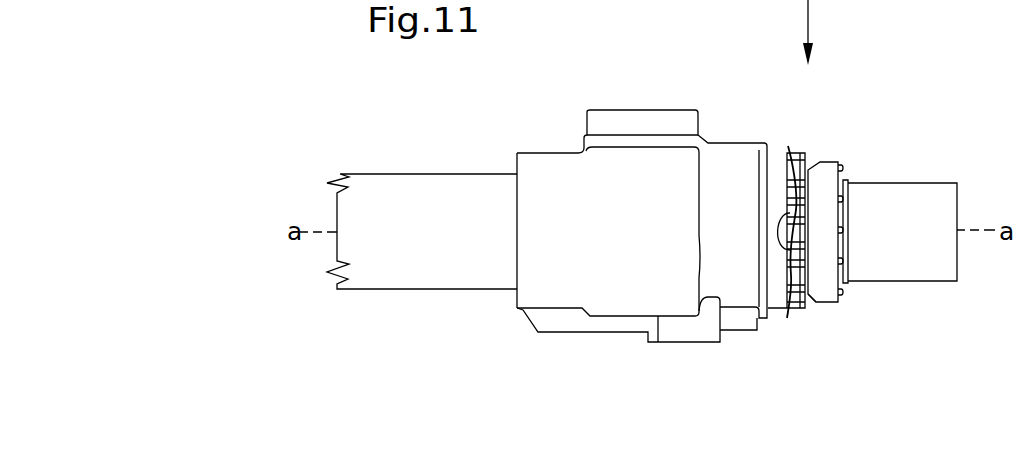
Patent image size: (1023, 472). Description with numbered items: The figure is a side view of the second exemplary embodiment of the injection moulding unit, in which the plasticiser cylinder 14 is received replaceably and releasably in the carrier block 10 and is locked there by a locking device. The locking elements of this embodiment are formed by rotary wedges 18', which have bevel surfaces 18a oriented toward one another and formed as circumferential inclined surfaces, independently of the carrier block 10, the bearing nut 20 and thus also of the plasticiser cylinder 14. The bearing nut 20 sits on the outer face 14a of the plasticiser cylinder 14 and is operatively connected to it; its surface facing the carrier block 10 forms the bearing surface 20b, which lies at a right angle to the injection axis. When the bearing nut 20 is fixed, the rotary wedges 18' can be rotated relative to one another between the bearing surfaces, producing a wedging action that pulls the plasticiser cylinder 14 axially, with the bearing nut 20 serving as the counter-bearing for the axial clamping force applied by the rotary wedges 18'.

The carrier block 10 is at (555, 187).
The plasticiser cylinder 14 is at (923, 183).
The outer face 14a is at (442, 222).
The rotary wedges 18' is at (782, 191).
The bevel surfaces 18a is at (800, 282).
The bearing nut 20 is at (818, 182).
The bearing surface 20b is at (803, 268).